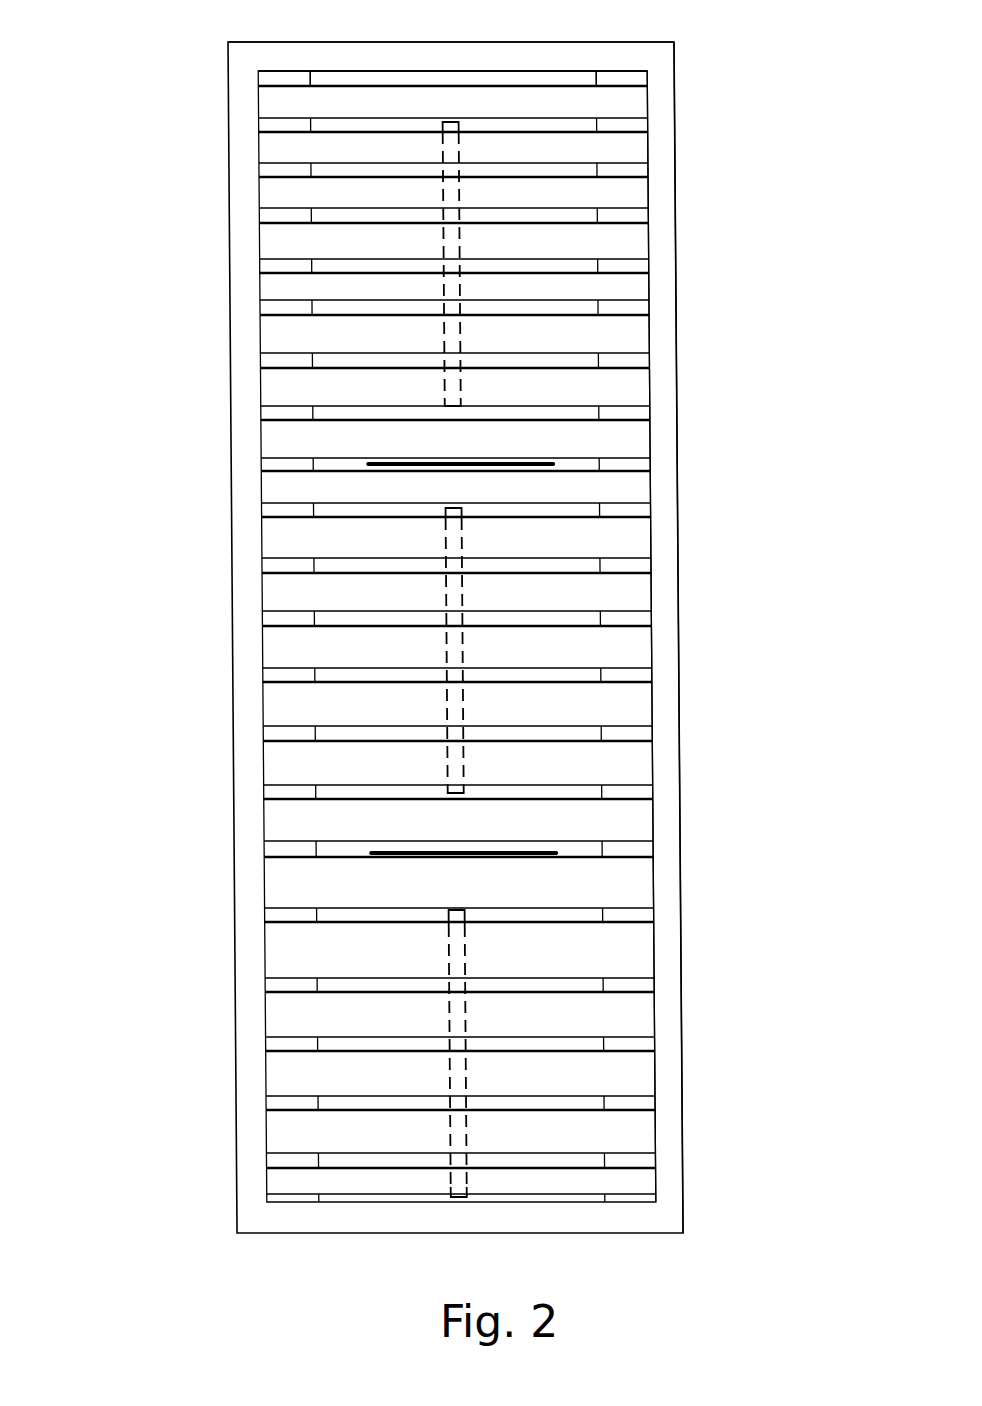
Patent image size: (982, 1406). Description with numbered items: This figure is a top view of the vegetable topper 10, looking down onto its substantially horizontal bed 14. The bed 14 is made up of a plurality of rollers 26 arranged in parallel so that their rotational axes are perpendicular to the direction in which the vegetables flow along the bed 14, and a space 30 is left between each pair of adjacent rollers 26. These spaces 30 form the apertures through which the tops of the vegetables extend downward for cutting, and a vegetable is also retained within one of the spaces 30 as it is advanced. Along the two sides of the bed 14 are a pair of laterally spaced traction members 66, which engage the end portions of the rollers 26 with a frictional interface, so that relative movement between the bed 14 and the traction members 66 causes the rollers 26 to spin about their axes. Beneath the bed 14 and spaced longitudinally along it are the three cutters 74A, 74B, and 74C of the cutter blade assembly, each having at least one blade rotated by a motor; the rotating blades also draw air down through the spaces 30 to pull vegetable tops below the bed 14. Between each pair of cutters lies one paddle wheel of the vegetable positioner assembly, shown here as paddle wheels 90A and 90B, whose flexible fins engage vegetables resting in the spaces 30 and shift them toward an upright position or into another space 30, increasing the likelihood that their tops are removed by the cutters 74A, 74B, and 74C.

The vegetable topper 10 is at (675, 42).
The bed 14 is at (665, 170).
The rollers 26 is at (417, 100).
The space 30 is at (558, 357).
The traction members 66 is at (278, 78).
The cutter 74A is at (452, 1012).
The cutter 74B is at (448, 637).
The cutter 74C is at (445, 337).
The paddle wheel 90A is at (523, 851).
The paddle wheel 90B is at (503, 458).